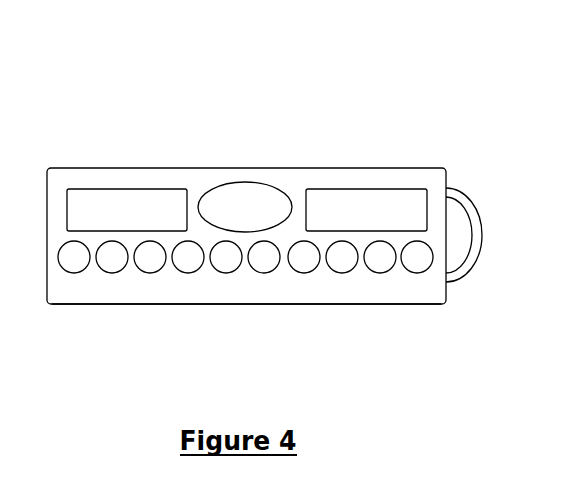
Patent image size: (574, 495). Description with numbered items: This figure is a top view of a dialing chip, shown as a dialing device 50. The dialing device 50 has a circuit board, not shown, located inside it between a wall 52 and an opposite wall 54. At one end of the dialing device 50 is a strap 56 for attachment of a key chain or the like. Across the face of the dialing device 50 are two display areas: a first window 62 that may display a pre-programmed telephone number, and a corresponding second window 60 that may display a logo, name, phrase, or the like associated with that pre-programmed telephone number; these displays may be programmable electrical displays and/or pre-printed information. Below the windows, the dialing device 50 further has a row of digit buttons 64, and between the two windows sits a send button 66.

The dialing device 50 is at (360, 69).
The wall 52 is at (418, 168).
The opposite wall 54 is at (434, 306).
The strap 56 is at (467, 200).
The second window 60 is at (82, 200).
The first window 62 is at (322, 198).
The digit buttons 64 is at (73, 273).
The send button 66 is at (233, 192).